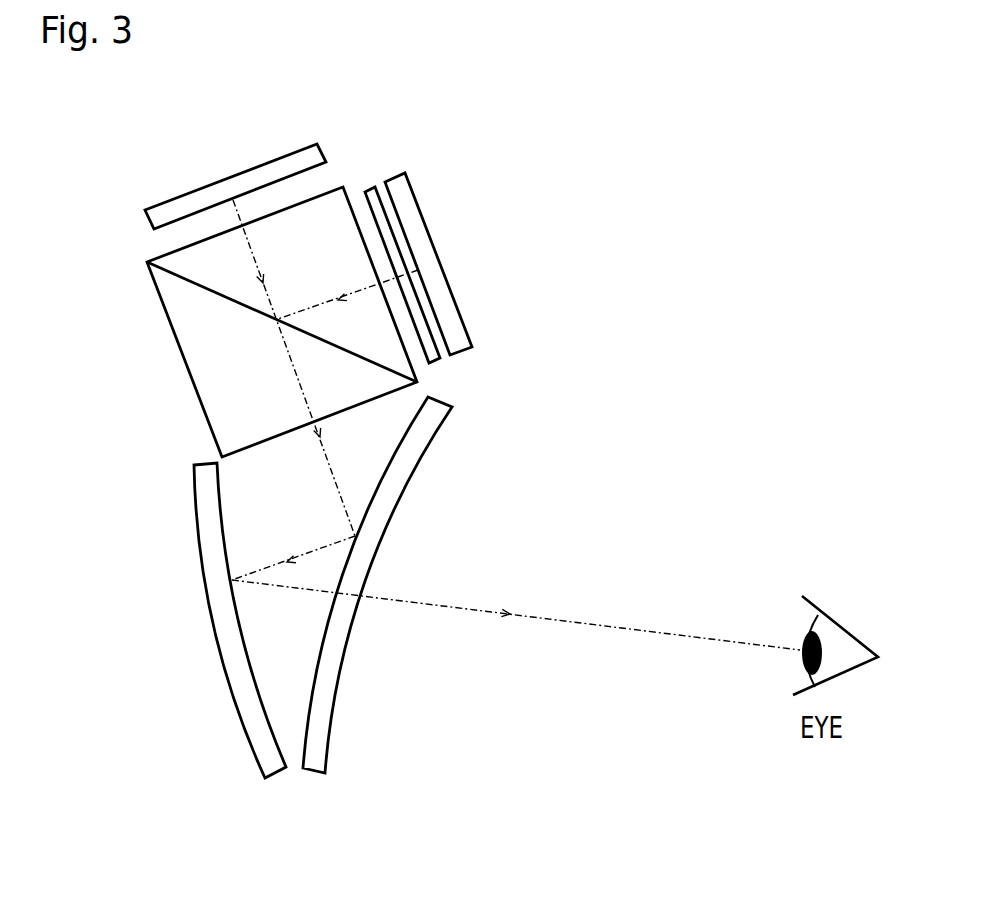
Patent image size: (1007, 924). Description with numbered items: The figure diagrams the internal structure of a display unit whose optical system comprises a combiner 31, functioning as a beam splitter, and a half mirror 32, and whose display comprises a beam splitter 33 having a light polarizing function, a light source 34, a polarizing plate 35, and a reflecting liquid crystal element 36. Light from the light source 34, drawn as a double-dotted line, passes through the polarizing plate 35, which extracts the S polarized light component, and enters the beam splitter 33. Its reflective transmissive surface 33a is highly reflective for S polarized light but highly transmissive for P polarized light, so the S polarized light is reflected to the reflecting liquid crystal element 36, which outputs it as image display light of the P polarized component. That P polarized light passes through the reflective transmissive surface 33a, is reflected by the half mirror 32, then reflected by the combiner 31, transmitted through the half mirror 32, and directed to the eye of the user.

The combiner 31 is at (217, 712).
The half mirror 32 is at (372, 705).
The beam splitter 33 is at (182, 388).
The reflective transmissive surface 33a is at (202, 305).
The light source 34 is at (490, 323).
The polarizing plate 35 is at (368, 172).
The reflecting liquid crystal element 36 is at (140, 197).